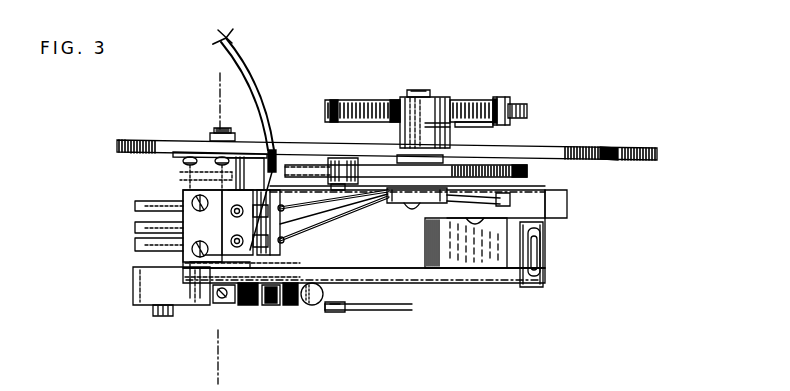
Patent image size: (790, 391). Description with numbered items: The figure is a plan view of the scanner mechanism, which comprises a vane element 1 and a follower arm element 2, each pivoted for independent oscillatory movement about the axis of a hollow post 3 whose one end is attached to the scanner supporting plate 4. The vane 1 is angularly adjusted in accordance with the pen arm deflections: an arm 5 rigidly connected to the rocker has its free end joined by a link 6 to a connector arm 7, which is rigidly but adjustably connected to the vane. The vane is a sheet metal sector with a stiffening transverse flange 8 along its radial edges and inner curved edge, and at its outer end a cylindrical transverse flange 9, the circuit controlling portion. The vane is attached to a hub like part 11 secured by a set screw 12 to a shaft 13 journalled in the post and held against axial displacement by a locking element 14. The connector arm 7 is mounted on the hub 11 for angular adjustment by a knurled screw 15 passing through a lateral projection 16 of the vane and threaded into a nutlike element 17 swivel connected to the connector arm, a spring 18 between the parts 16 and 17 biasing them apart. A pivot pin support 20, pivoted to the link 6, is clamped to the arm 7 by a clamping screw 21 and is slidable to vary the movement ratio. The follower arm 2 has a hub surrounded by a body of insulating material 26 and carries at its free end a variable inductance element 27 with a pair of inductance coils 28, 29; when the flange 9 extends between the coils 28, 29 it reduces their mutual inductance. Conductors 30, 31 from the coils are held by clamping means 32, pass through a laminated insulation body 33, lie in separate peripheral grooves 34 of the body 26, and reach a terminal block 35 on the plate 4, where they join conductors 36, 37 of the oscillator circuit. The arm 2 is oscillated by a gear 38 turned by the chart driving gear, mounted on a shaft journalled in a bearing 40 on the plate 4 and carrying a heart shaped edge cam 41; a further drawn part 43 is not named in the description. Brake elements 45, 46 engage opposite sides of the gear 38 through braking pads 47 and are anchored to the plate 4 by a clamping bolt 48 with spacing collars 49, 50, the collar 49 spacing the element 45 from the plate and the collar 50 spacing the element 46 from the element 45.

The vane element 1 is at (432, 283).
The follower arm element 2 is at (410, 194).
The post 3 is at (240, 170).
The scanner supporting plate 4 is at (579, 151).
The arm 5 is at (210, 91).
The link 6 is at (382, 301).
The connector arm 7 is at (380, 311).
The stiffening transverse flange 8 is at (470, 279).
The transverse flange 9 is at (545, 276).
The hub like part 11 is at (238, 305).
The set screw 12 is at (220, 303).
The shaft 13 is at (216, 134).
The locking element 14 is at (229, 134).
The screw 15 is at (250, 306).
The lateral projection 16 is at (286, 304).
The nutlike element 17 is at (270, 274).
The spring 18 is at (268, 305).
The pivot pin support 20 is at (352, 300).
The clamping screw 21 is at (330, 311).
The body of insulating material 26 is at (160, 196).
The variable inductance element 27 is at (568, 205).
The inductance coil 28 is at (521, 279).
The inductance coil 29 is at (545, 266).
The conductor 30 is at (143, 241).
The conductor 31 is at (143, 208).
The clamping means 32 is at (398, 203).
The laminated insulation body 33 is at (298, 238).
The peripheral grooves 34 is at (143, 234).
The terminal block 35 is at (196, 172).
The conductor 36 is at (216, 43).
The conductor 37 is at (226, 37).
The gear 38 is at (470, 104).
The bearing 40 is at (452, 137).
The edge cam 41 is at (530, 172).
The gear 43 is at (336, 162).
The brake element 45 is at (512, 123).
The brake element 46 is at (501, 104).
The braking pads 47 is at (325, 114).
The clamping bolt 48 is at (426, 90).
The spacing collar 49 is at (410, 104).
The spacing collar 50 is at (414, 97).